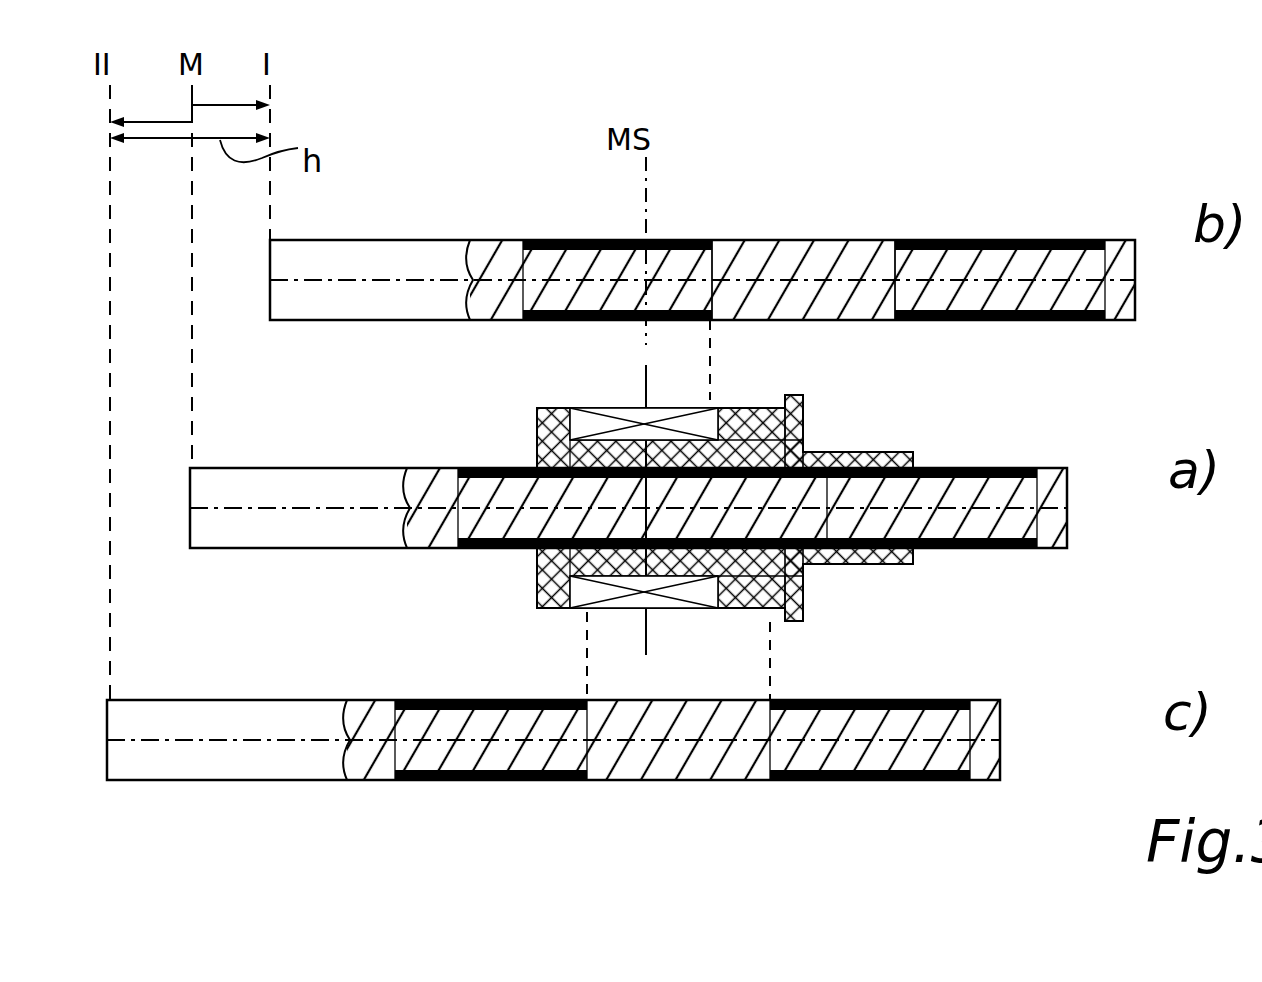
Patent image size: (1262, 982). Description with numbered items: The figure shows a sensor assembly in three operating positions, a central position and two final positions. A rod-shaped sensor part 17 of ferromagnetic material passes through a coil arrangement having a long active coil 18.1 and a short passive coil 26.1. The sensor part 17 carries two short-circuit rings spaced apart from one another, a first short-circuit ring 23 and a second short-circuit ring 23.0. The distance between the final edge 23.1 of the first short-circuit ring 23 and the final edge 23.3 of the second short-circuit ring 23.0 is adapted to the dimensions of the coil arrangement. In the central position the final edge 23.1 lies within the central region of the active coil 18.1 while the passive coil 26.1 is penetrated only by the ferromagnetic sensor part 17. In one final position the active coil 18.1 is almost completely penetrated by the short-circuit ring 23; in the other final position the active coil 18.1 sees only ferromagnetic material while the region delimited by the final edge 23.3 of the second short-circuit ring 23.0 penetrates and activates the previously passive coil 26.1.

The rod-shaped sensor part 17 is at (322, 515).
The first short-circuit ring 23 is at (551, 228).
The second short-circuit ring 23.0 is at (976, 230).
The final edge of the short-circuit ring 23.1 is at (702, 238).
The final edge of the short-circuit ring 23.3 is at (880, 238).
The active coil 18.1 is at (537, 428).
The passive coil 26.1 is at (805, 422).